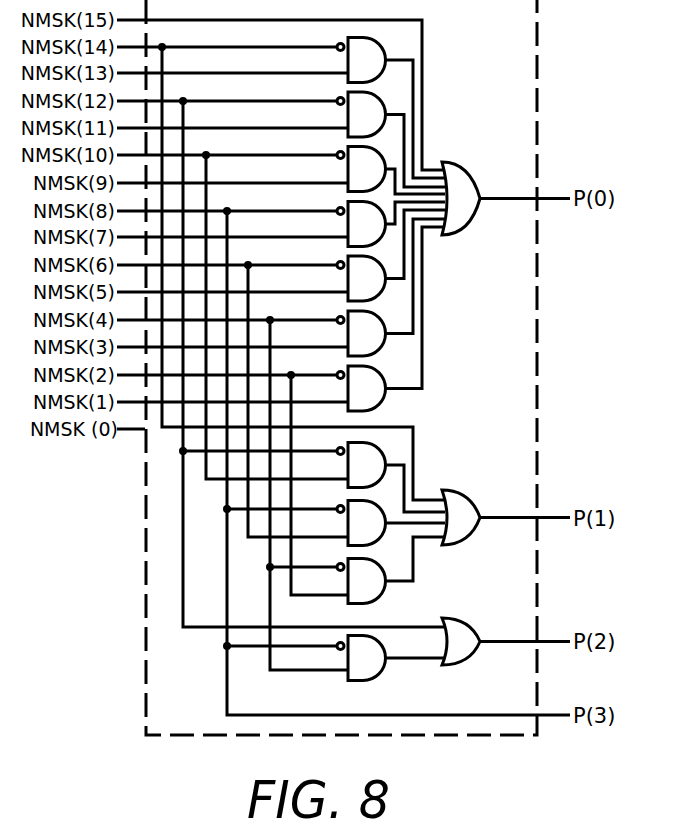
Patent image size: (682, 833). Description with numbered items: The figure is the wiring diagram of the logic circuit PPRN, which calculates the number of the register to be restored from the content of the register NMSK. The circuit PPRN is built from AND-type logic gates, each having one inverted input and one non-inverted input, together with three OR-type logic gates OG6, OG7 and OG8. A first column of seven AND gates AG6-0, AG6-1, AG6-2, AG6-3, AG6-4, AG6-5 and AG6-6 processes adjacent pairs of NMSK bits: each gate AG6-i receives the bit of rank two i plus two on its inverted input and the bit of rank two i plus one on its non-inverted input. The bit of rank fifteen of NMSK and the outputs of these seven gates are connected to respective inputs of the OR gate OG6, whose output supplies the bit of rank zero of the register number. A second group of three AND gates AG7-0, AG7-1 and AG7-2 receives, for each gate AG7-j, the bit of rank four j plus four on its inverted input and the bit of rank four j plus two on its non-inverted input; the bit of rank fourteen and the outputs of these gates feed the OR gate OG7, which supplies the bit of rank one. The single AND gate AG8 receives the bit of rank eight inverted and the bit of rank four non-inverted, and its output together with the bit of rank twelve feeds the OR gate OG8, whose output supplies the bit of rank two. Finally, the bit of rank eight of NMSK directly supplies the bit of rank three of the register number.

The logic circuit PPRN is at (341, 367).
The AND-type logic gate AG6-6 is at (386, 46).
The AND-type logic gate AG6-5 is at (384, 102).
The AND-type logic gate AG6-4 is at (386, 161).
The AND-type logic gate AG6-3 is at (386, 237).
The AND-type logic gate AG6-2 is at (386, 291).
The AND-type logic gate AG6-1 is at (386, 346).
The AND-type logic gate AG6-0 is at (385, 400).
The OR-type logic gate OG6 is at (466, 178).
The AND-type logic gate AG7-2 is at (385, 456).
The AND-type logic gate AG7-1 is at (385, 540).
The AND-type logic gate AG7-0 is at (384, 590).
The OR-type logic gate OG7 is at (466, 503).
The AND-type logic gate AG8 is at (384, 670).
The OR-type logic gate OG8 is at (463, 652).